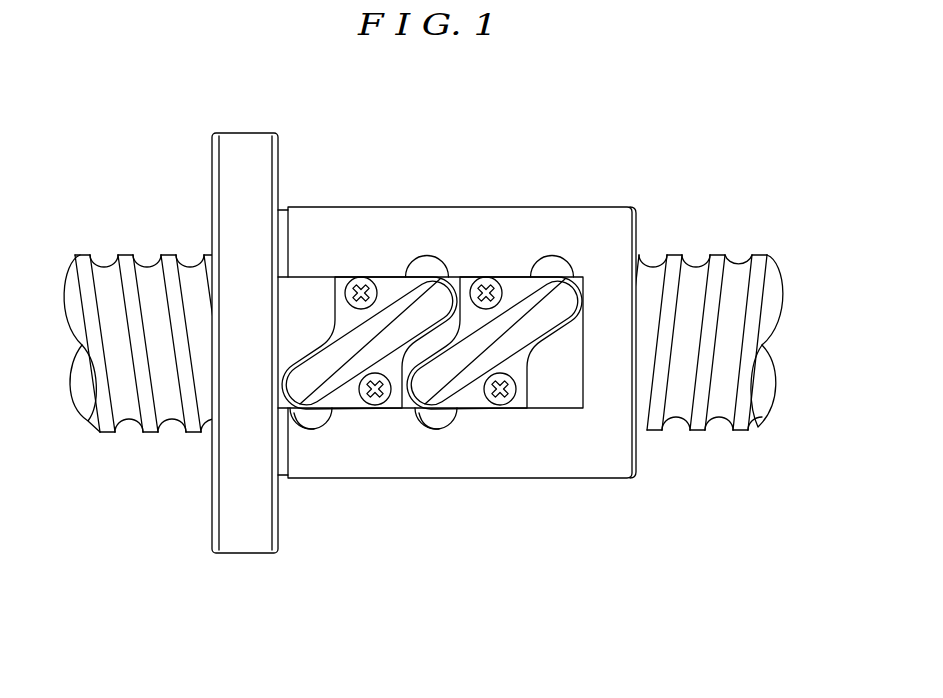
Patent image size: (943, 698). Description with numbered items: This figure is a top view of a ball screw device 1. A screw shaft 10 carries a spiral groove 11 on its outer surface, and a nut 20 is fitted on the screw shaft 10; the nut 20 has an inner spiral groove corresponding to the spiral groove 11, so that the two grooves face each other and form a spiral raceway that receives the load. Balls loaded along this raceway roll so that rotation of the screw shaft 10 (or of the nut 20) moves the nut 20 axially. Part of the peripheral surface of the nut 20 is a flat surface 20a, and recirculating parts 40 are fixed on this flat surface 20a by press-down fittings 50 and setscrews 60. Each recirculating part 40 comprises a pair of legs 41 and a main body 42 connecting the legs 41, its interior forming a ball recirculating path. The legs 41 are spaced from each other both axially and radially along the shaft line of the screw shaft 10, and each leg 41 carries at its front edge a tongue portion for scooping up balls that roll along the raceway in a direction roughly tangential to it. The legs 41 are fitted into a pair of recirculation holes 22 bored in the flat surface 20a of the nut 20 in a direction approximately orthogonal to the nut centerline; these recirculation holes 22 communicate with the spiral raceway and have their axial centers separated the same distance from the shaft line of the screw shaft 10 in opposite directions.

The ball screw device 1 is at (608, 157).
The screw shaft 10 is at (720, 249).
The spiral groove 11 is at (718, 432).
The nut 20 is at (600, 455).
The flat surface 20a is at (312, 305).
The recirculation holes 22 is at (318, 420).
The recirculating part 40 is at (431, 343).
The legs 41 is at (427, 262).
The main body 42 is at (388, 323).
The press-down fittings 50 is at (328, 378).
The setscrews 60 is at (361, 288).